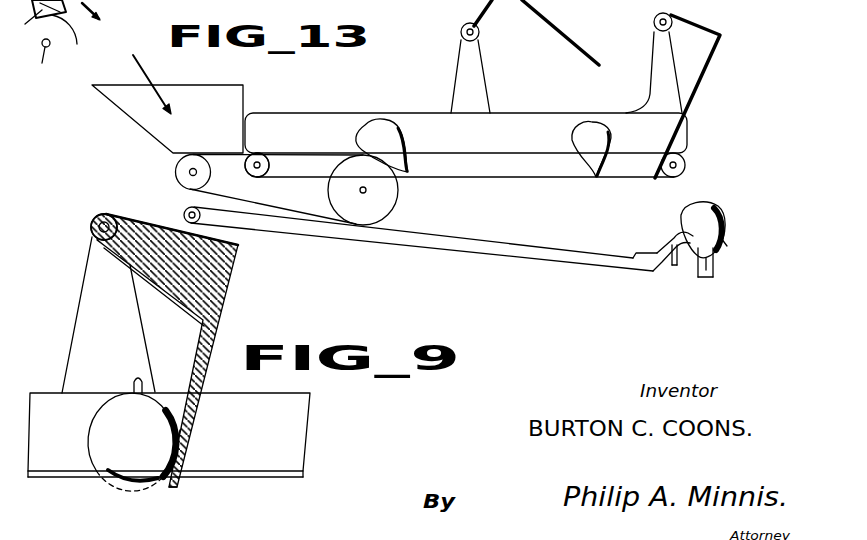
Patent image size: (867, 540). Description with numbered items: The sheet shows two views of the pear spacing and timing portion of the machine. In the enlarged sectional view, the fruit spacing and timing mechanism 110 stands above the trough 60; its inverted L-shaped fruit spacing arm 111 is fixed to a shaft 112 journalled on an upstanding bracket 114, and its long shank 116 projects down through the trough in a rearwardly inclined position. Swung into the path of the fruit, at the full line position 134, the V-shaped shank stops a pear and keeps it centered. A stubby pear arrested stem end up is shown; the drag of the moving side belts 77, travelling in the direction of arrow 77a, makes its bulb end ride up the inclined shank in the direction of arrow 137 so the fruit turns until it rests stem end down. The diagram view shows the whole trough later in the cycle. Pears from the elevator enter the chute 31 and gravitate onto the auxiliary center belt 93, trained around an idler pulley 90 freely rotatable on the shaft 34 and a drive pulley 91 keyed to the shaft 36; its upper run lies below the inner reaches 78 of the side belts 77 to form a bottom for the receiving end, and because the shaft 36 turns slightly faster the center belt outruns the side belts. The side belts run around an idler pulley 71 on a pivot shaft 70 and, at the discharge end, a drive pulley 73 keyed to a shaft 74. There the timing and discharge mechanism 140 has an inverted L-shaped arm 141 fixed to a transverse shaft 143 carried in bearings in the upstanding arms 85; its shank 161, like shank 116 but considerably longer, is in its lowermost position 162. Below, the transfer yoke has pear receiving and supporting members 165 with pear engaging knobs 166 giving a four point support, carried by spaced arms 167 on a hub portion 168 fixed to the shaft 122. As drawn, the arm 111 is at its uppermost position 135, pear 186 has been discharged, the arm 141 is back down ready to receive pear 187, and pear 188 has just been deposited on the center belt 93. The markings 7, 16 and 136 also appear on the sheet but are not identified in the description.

In FIG. 13, the section line 7 is at (43, 61).
In FIG. 13, the frame member 16 is at (62, 22).
In FIG. 13, the chute 31 is at (183, 103).
In FIG. 13, the shaft 34 is at (189, 173).
In FIG. 13, the shaft 36 is at (367, 190).
In FIG. 13, the trough 60 is at (312, 130).
In FIG. 13, the pivot shaft 70 is at (260, 176).
In FIG. 13, the idler pulley 71 is at (249, 169).
In FIG. 13, the drive pulley 73 is at (684, 170).
In FIG. 13, the shaft 74 is at (676, 164).
In FIG. 13, the side belts 77 is at (352, 122).
In FIG. 9, the side belts 77 is at (50, 405).
In FIG. 13, the arrow 77a is at (480, 134).
In FIG. 9, the arrow 77a is at (266, 416).
In FIG. 9, the inner reaches 78 is at (228, 404).
In FIG. 13, the upstanding arms 85 is at (665, 52).
In FIG. 13, the idler pulley 90 is at (178, 182).
In FIG. 13, the drive pulley 91 is at (385, 203).
In FIG. 13, the auxiliary center belt 93 is at (306, 216).
In FIG. 13, the fruit spacing and timing mechanism 110 is at (459, 13).
In FIG. 9, the fruit spacing and timing mechanism 110 is at (100, 207).
In FIG. 13, the fruit spacing arm 111 is at (546, 20).
In FIG. 9, the fruit spacing arm 111 is at (213, 328).
In FIG. 13, the shaft 112 is at (461, 34).
In FIG. 9, the shaft 112 is at (91, 228).
In FIG. 13, the upstanding bracket 114 is at (476, 70).
In FIG. 9, the upstanding bracket 114 is at (98, 297).
In FIG. 13, the long shank 116 is at (591, 62).
In FIG. 9, the long shank 116 is at (182, 463).
In FIG. 13, the shaft 122 is at (183, 215).
In FIG. 9, the full line position 134 is at (193, 488).
In FIG. 13, the uppermost position 135 is at (563, 32).
In FIG. 9, the dough ball 136 is at (147, 429).
In FIG. 9, the arrow 137 is at (160, 446).
In FIG. 13, the timing and discharge mechanism 140 is at (696, 20).
In FIG. 13, the inverted L-shaped arm 141 is at (698, 91).
In FIG. 13, the transverse shaft 143 is at (656, 15).
In FIG. 13, the shank 161 is at (656, 179).
In FIG. 13, the lowermost position 162 is at (650, 180).
In FIG. 13, the pear receiving and supporting members 165 is at (670, 242).
In FIG. 13, the pear engaging knobs 166 is at (725, 240).
In FIG. 13, the spaced arms 167 is at (505, 245).
In FIG. 13, the hub portion 168 is at (250, 230).
In FIG. 13, the pear 186 is at (703, 230).
In FIG. 13, the pear 187 is at (591, 149).
In FIG. 13, the pear 188 is at (382, 145).